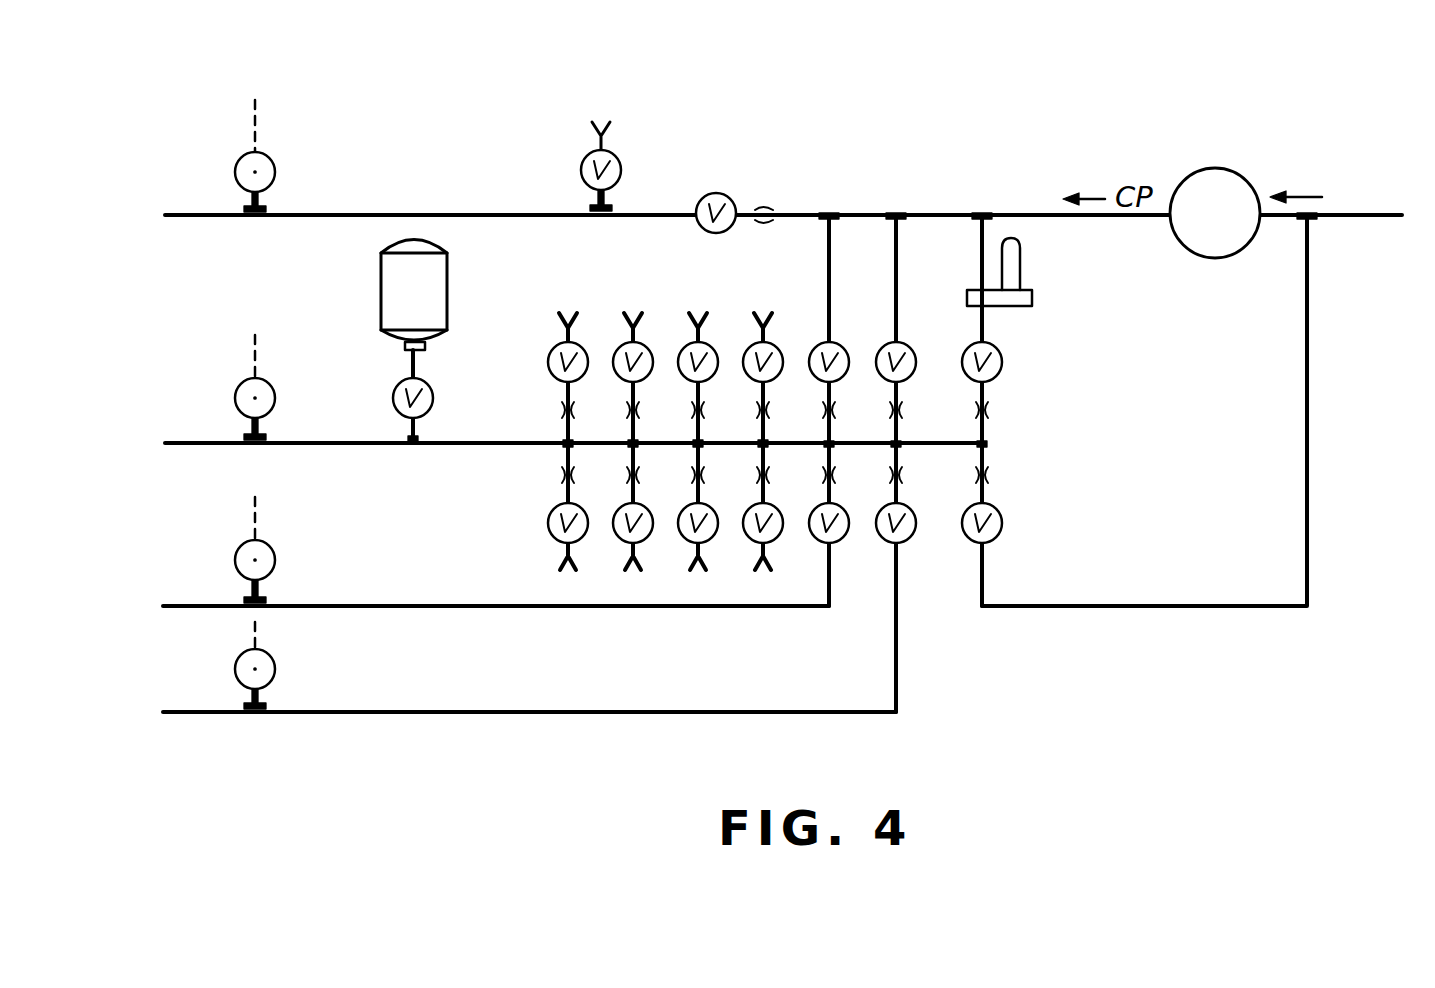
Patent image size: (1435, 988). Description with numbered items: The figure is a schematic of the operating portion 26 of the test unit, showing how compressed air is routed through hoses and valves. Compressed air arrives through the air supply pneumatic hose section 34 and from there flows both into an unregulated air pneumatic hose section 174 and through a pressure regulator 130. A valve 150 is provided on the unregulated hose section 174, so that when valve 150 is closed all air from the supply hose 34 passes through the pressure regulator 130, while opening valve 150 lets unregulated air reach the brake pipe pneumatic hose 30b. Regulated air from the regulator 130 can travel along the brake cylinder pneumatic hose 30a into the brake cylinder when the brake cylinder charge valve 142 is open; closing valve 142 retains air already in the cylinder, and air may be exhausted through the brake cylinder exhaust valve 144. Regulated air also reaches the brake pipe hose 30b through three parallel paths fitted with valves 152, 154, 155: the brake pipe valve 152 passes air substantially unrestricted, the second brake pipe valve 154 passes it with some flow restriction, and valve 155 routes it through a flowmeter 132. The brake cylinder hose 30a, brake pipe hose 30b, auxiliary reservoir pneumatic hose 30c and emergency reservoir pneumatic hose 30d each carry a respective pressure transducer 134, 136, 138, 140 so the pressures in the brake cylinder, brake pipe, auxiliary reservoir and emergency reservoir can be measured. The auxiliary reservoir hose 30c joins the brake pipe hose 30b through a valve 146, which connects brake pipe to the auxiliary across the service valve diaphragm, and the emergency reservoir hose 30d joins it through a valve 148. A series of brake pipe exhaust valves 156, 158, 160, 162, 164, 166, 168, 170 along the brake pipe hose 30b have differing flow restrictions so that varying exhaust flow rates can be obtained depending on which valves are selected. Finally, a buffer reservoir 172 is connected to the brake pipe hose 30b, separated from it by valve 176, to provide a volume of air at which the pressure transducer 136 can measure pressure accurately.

The operating portion 26 is at (883, 162).
The brake cylinder pneumatic hose 30a is at (402, 213).
The brake pipe pneumatic hose 30b is at (388, 398).
The auxiliary reservoir pneumatic hose 30c is at (331, 604).
The emergency reservoir pneumatic hose 30d is at (338, 710).
The air supply pneumatic hose section 34 is at (1379, 213).
The pressure regulator 130 is at (1243, 178).
The flowmeter 132 is at (1011, 268).
The pressure transducer 134 is at (237, 168).
The pressure transducer 136 is at (236, 398).
The pressure transducer 138 is at (236, 560).
The pressure transducer 140 is at (236, 669).
The brake cylinder charge valve 142 is at (717, 193).
The brake cylinder exhaust valve 144 is at (583, 161).
The valve 146 is at (845, 538).
The valve 148 is at (912, 538).
The valve 150 is at (1003, 523).
The brake pipe valve 152 is at (843, 346).
The second brake pipe valve 154 is at (909, 346).
The valve 155 is at (1003, 363).
The brake pipe exhaust valve 156 is at (556, 348).
The brake pipe exhaust valve 158 is at (621, 348).
The brake pipe exhaust valve 160 is at (686, 348).
The brake pipe exhaust valve 162 is at (752, 348).
The brake pipe exhaust valve 164 is at (553, 540).
The brake pipe exhaust valve 166 is at (618, 540).
The brake pipe exhaust valve 168 is at (684, 540).
The brake pipe exhaust valve 170 is at (750, 540).
The buffer reservoir 172 is at (381, 288).
The unregulated air pneumatic hose section 174 is at (1307, 437).
The valve 176 is at (435, 398).